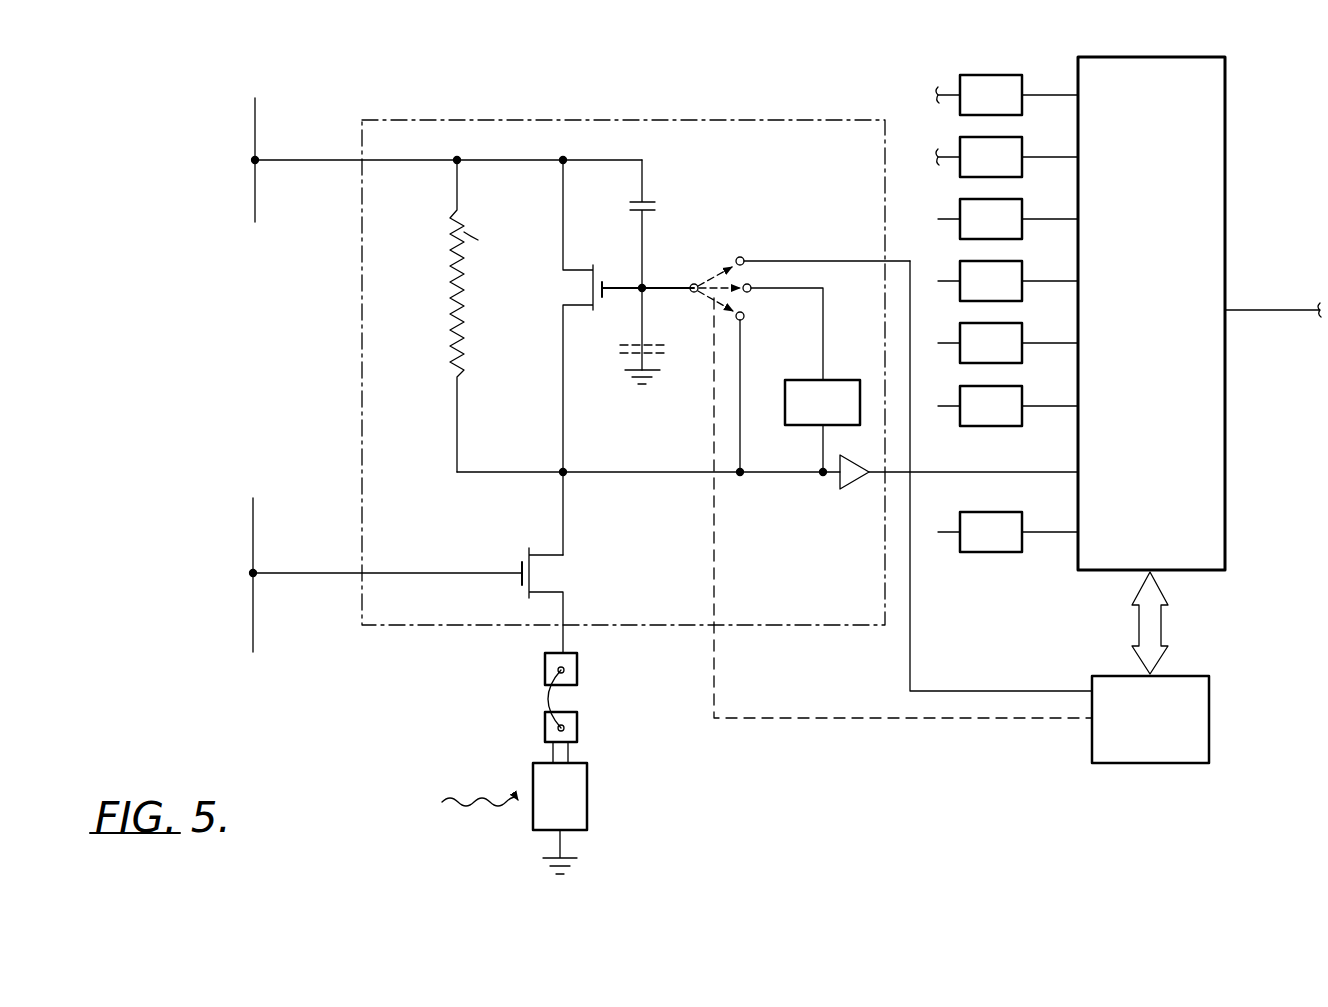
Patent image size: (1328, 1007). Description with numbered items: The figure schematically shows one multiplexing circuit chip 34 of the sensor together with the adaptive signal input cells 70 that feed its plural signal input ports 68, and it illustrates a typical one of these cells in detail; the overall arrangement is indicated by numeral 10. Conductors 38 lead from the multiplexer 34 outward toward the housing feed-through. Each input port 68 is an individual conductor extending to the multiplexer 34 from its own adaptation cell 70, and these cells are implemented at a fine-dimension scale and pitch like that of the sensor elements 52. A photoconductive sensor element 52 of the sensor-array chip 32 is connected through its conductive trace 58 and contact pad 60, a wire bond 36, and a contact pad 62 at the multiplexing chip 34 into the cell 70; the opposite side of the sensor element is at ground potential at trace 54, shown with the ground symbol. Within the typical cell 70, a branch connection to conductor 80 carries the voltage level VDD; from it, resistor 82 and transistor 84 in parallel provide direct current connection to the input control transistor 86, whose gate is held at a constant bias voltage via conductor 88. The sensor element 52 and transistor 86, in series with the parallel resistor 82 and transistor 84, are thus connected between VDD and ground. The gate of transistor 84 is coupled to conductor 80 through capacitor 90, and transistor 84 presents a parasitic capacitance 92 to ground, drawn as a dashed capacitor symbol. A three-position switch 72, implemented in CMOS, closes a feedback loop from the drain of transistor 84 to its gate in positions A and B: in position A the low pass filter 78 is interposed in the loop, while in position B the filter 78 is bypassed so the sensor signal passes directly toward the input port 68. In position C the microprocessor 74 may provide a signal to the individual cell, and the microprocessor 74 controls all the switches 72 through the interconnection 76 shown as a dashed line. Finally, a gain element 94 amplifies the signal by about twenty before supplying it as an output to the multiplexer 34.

The sensor system 10 is at (792, 76).
The adaptive signal input cell 70 is at (640, 118).
The conductor 80 is at (252, 200).
The resistor 82 is at (451, 290).
The transistor 84 is at (566, 283).
The input control transistor 86 is at (575, 568).
The conductor 88 is at (250, 530).
The capacitor 90 is at (658, 205).
The parasitic capacitance 92 is at (624, 356).
The three-position switch 72 is at (722, 268).
The low pass filter 78 is at (800, 378).
The gain element 94 is at (855, 488).
The interconnection 76 is at (860, 722).
The microprocessor 74 is at (1125, 765).
The multiplexing circuit chip 34 is at (1226, 170).
The conductors 38 is at (1262, 310).
The signal input port 68 is at (1055, 157).
The wire bond 36 is at (547, 697).
The contact pad 62 is at (578, 672).
The contact pad 60 is at (578, 730).
The conductive trace 58 is at (546, 750).
The sensor element 52 is at (590, 806).
The conductive trace 54 is at (573, 856).
The sensor-array chip 32 is at (634, 766).